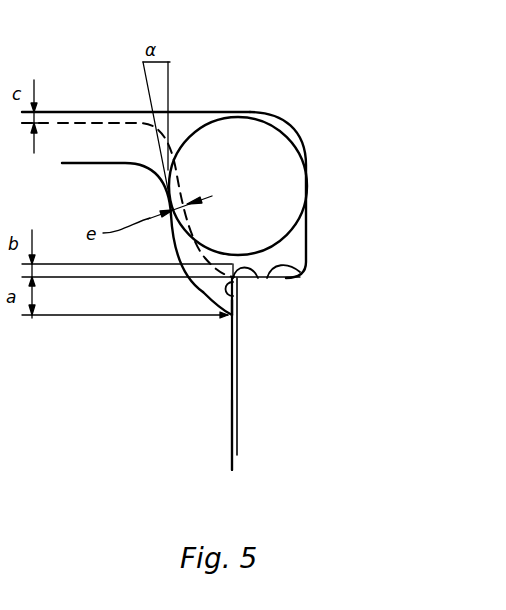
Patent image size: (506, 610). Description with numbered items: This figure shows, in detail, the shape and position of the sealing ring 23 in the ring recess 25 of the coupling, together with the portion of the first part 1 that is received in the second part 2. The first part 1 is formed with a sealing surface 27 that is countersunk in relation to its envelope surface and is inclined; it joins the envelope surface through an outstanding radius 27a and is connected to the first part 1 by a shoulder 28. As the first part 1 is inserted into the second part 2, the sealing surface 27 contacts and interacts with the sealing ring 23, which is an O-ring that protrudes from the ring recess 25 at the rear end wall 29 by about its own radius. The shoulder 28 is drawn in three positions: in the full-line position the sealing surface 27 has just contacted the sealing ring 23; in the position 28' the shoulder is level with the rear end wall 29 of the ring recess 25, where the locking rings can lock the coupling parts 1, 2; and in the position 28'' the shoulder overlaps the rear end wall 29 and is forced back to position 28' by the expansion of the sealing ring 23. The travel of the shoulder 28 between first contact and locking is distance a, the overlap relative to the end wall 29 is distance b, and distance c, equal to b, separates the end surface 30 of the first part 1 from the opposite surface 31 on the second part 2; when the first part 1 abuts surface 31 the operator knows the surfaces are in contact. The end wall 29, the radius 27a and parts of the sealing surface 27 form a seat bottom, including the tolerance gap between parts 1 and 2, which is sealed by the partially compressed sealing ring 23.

The first part 1 is at (236, 434).
The second part 2 is at (193, 395).
The sealing ring 23 is at (284, 166).
The ring recess 25 is at (295, 241).
The sealing surface 27 is at (176, 242).
The outstanding radius 27a is at (190, 300).
The shoulder 28 is at (172, 342).
The shoulder position level with end wall 28' is at (262, 319).
The shoulder overlapping position 28'' is at (312, 290).
The rear end wall 29 is at (300, 277).
The end surface 30 is at (118, 163).
The opposite surface 31 is at (89, 111).